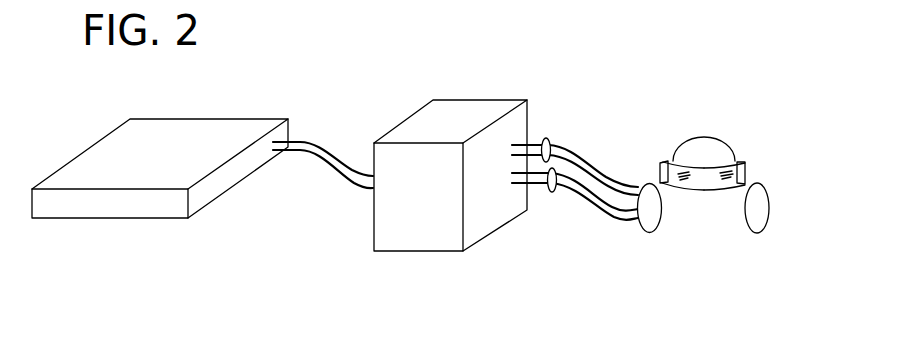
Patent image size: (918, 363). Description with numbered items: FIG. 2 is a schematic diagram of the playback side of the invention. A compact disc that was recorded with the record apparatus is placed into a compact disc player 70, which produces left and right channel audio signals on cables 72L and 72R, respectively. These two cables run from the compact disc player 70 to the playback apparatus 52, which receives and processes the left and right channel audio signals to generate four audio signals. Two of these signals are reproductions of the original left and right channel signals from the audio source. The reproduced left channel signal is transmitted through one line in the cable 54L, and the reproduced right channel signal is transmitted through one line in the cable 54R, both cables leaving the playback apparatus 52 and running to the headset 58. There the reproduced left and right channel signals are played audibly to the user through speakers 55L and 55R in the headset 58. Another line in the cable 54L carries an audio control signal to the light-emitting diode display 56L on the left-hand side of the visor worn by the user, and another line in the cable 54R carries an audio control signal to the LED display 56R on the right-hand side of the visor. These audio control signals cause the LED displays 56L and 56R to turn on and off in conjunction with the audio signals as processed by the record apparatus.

The compact disc player 70 is at (95, 204).
The right channel cable 72R is at (308, 138).
The left channel cable 72L is at (337, 165).
The playback apparatus 52 is at (412, 248).
The right cable 54R is at (550, 140).
The left cable 54L is at (547, 183).
The right speaker 55R is at (643, 227).
The left speaker 55L is at (763, 217).
The right LED display 56R is at (672, 162).
The left LED display 56L is at (725, 182).
The headset 58 is at (704, 172).